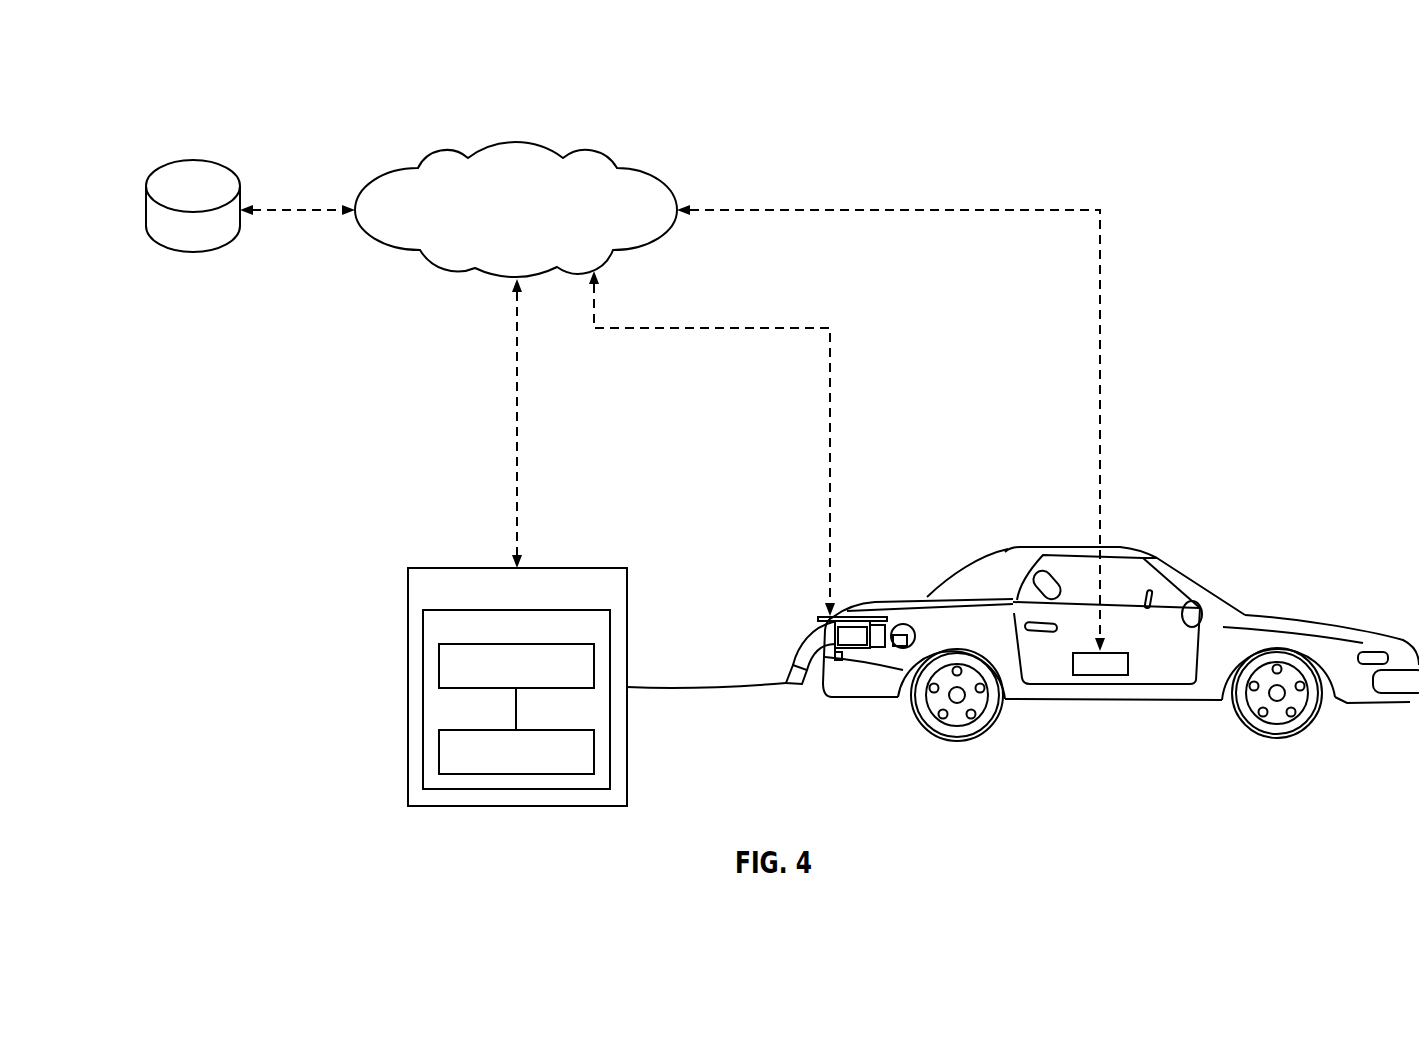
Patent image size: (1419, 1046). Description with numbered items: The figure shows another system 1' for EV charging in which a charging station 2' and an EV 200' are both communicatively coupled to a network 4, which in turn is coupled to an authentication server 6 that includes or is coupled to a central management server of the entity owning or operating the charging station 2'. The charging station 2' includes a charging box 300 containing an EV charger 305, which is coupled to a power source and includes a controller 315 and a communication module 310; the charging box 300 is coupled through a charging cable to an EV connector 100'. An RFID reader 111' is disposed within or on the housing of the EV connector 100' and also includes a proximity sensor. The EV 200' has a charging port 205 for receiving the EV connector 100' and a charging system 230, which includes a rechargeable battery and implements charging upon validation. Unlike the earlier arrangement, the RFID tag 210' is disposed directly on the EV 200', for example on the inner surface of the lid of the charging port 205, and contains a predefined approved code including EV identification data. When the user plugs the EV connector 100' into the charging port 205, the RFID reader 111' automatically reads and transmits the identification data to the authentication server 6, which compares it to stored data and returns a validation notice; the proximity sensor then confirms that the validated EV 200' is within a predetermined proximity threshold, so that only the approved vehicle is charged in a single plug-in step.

The system 1' is at (109, 59).
The authentication server 6 is at (193, 160).
The network 4 is at (517, 143).
The charging box 300 is at (473, 567).
The EV charger 305 is at (485, 609).
The communication module 310 is at (507, 643).
The controller 315 is at (507, 729).
The charging station 2' is at (720, 563).
The EV connector 100' is at (760, 617).
The RFID reader 111' is at (865, 596).
The charging port 205 is at (903, 624).
The RFID tag 210' is at (943, 624).
The EV 200' is at (1121, 644).
The charging system 230 is at (1108, 653).